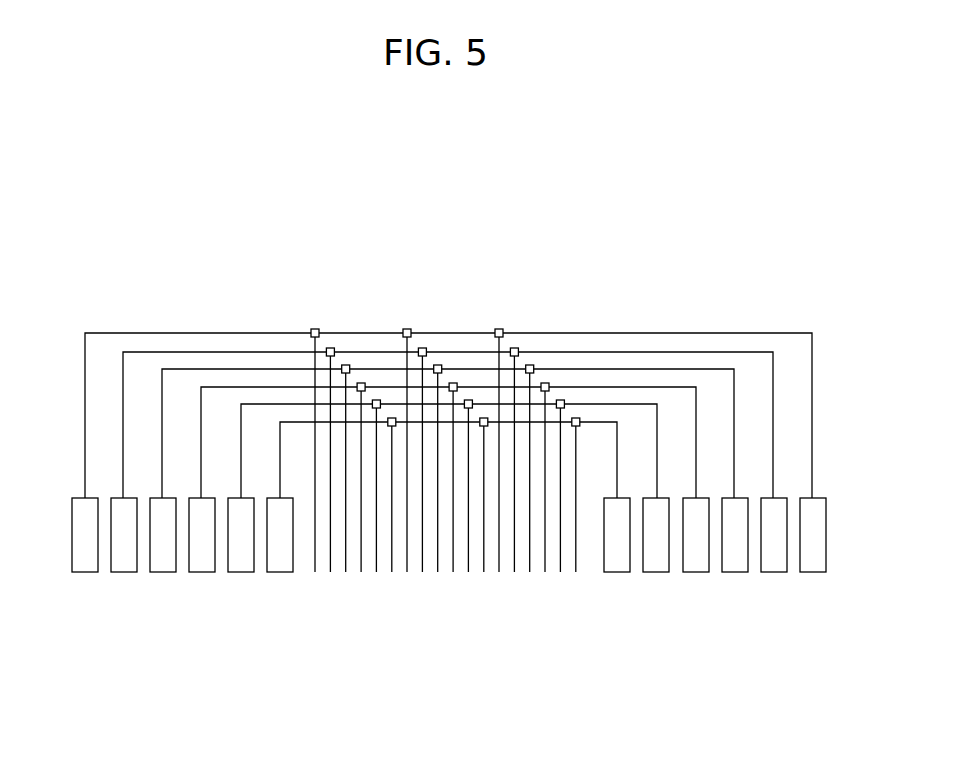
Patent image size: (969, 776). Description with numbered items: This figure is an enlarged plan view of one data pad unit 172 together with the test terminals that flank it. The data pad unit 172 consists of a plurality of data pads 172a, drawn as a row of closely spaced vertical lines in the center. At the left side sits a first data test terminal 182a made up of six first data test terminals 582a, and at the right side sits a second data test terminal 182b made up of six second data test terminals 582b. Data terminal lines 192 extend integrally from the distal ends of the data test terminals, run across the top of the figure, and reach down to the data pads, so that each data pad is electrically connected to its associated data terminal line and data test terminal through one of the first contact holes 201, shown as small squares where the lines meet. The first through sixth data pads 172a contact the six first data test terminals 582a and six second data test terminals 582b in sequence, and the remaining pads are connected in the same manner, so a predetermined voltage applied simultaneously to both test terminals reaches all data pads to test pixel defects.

The data terminal lines 192 is at (644, 333).
The first contact holes 201 is at (499, 333).
The data pad unit 172 is at (447, 459).
The data pads 172a is at (343, 558).
The first data test terminal 182a is at (158, 542).
The second data test terminal 182b is at (750, 542).
The first data test terminals 582a is at (58, 507).
The second data test terminals 582b is at (849, 507).